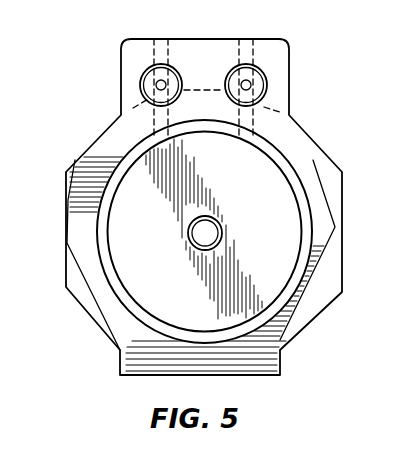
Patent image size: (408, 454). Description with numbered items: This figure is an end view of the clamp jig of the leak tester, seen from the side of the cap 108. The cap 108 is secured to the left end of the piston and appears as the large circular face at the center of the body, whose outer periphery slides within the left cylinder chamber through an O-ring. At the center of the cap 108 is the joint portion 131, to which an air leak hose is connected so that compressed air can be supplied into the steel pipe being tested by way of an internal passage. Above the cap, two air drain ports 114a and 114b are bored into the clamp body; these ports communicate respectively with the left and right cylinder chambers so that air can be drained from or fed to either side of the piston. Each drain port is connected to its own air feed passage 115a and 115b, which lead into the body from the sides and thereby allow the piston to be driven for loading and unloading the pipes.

The cap 108 is at (115, 233).
The air drain port 114a is at (165, 38).
The air drain port 114b is at (247, 38).
The air feed passage 115a is at (142, 80).
The air feed passage 115b is at (267, 78).
The joint portion 131 is at (219, 222).